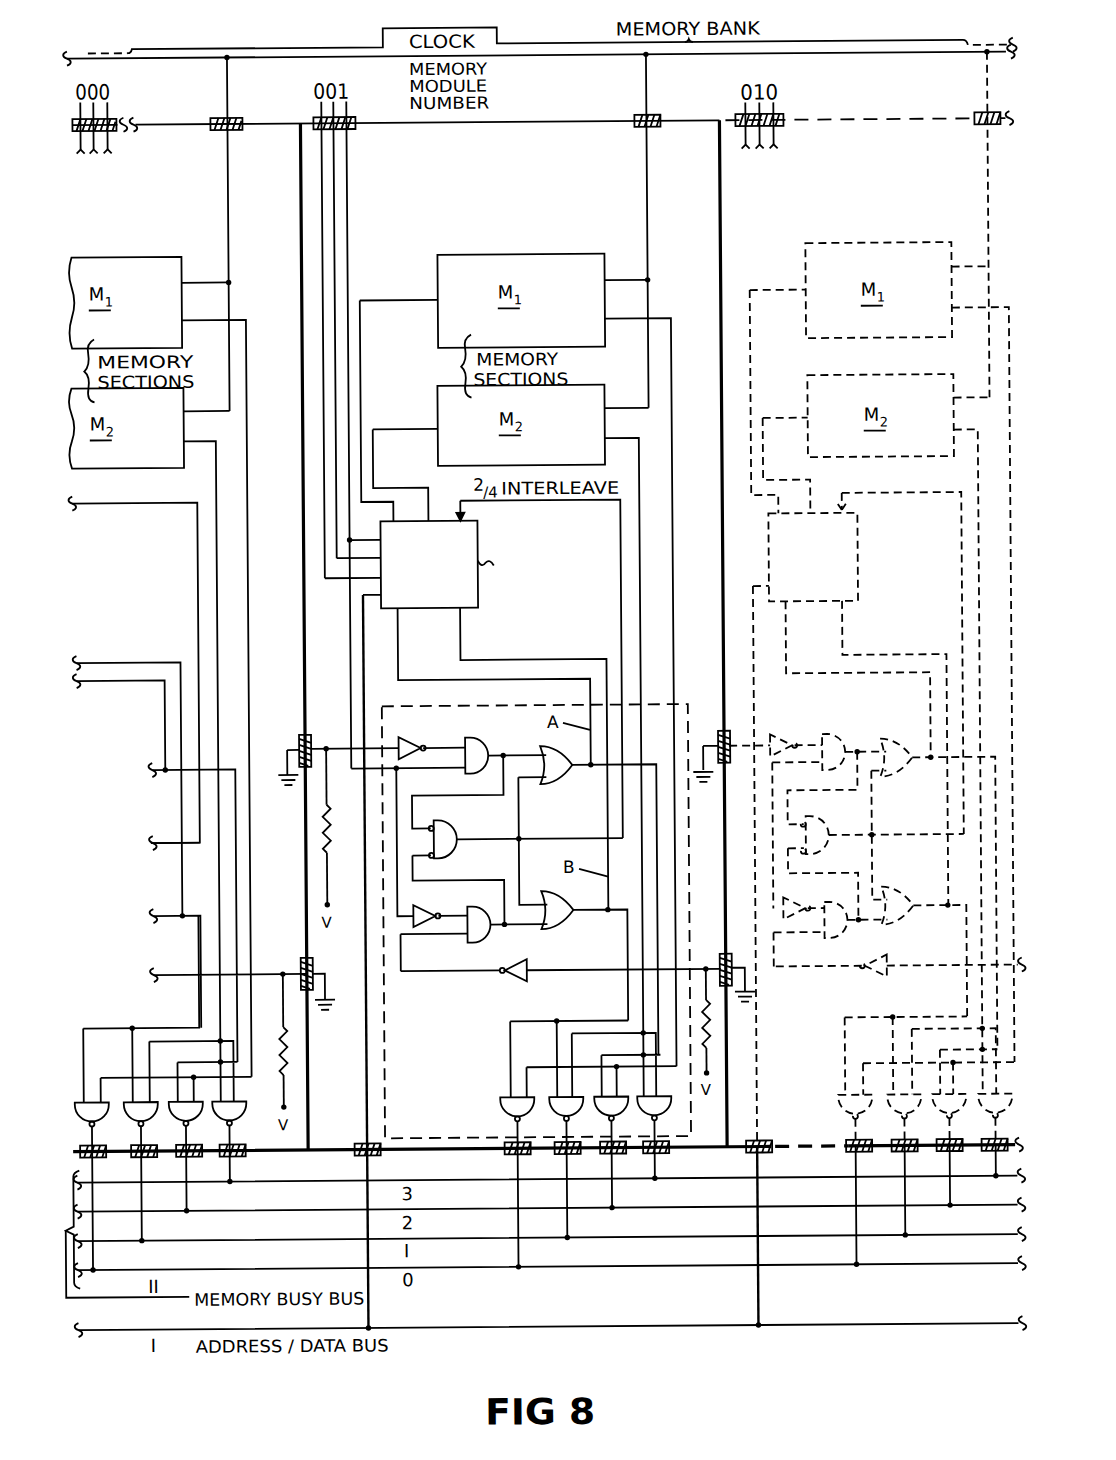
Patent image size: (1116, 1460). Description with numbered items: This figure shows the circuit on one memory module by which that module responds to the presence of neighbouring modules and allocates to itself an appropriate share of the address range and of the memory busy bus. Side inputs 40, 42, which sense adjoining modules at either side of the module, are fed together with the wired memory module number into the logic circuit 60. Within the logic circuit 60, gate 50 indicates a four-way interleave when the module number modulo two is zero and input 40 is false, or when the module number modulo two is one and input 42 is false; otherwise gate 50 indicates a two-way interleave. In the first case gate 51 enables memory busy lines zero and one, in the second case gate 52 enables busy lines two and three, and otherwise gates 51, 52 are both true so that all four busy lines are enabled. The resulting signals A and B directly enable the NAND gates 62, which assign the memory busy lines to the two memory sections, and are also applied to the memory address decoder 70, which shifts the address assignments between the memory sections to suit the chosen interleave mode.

The input 40 is at (720, 963).
The input 42 is at (311, 745).
The gate 50 is at (455, 824).
The gate 51 is at (561, 930).
The gate 52 is at (561, 785).
The logic circuit 60 is at (688, 705).
The NAND gates 62 is at (554, 1125).
The memory address decoder 70 is at (444, 568).